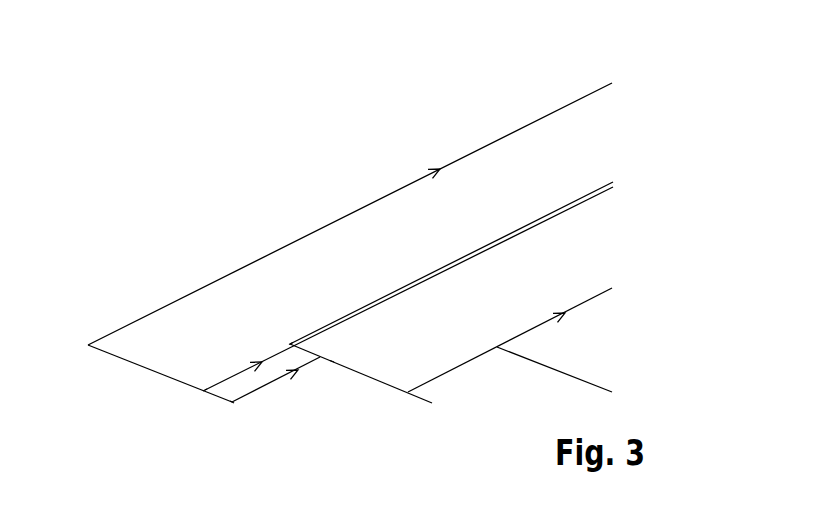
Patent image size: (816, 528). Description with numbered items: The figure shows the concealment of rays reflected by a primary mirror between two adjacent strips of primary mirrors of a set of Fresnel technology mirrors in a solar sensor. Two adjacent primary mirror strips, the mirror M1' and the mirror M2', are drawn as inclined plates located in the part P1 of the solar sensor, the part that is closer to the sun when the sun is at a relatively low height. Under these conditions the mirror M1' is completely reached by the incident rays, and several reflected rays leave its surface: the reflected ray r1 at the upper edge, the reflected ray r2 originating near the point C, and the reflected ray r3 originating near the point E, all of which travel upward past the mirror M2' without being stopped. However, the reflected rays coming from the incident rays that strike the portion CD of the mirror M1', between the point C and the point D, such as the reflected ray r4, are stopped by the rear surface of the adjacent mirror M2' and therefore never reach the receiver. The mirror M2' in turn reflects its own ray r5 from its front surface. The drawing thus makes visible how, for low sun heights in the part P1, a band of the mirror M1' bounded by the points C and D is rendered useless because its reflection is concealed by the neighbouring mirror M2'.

The reflected ray r1 is at (268, 255).
The reflected ray r2 is at (565, 211).
The reflected ray r3 is at (542, 216).
The reflected ray r4 is at (271, 385).
The reflected ray r5 is at (527, 331).
The primary mirror M1' is at (160, 414).
The primary mirror M2' is at (451, 416).
The point C is at (198, 402).
The point D is at (228, 412).
The point E is at (292, 346).
The part of the solar sensor P1 is at (324, 406).